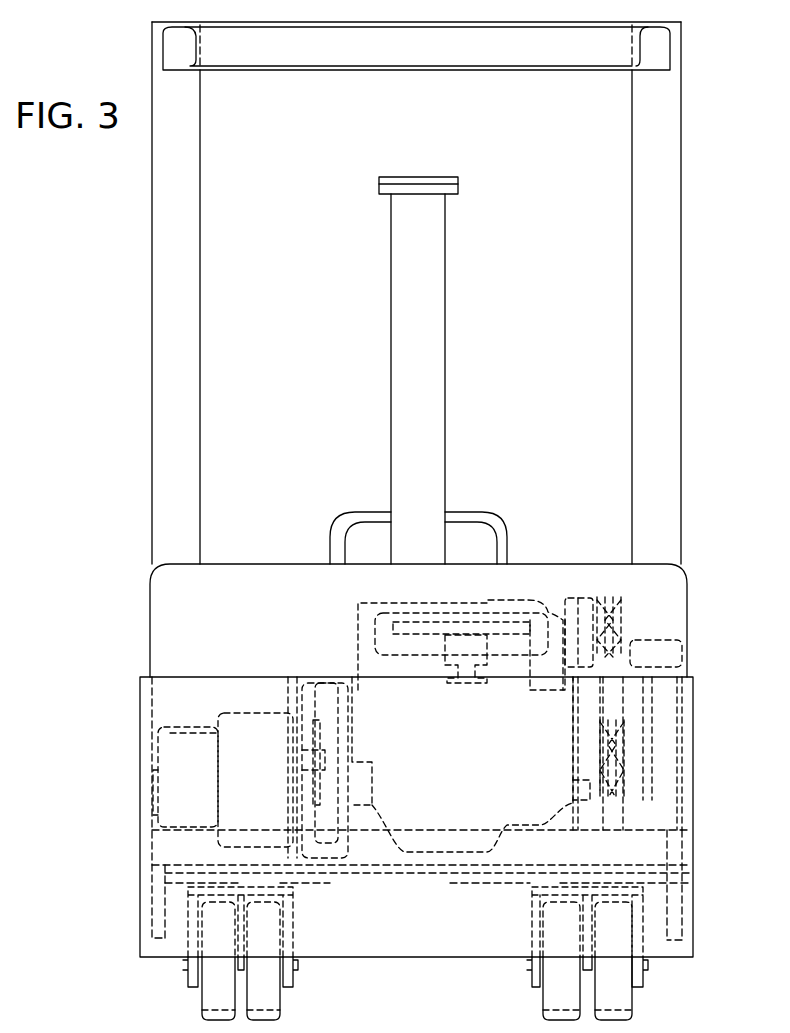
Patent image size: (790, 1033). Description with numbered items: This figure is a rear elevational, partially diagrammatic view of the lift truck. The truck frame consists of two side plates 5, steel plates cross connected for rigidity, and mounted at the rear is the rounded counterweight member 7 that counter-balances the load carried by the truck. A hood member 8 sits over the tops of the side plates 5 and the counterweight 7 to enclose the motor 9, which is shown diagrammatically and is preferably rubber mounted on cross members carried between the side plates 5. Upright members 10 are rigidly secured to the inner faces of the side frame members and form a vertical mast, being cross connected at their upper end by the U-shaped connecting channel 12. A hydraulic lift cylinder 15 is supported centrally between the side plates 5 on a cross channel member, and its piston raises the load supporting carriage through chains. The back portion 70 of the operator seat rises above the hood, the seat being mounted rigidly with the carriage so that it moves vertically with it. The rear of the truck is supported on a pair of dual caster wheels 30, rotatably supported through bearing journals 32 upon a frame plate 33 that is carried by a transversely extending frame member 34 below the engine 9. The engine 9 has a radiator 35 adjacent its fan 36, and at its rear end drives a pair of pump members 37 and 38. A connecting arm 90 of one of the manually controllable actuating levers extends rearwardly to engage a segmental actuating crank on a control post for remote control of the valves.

The side plates 5 is at (143, 728).
The counterweight member 7 is at (162, 685).
The hood member 8 is at (172, 587).
The motor 9 is at (360, 648).
The upright members 10 is at (168, 283).
The U-shaped connecting channel 12 is at (294, 52).
The hydraulic lift cylinder 15 is at (432, 350).
The dual caster wheels 30 is at (217, 989).
The bearing journals 32 is at (288, 882).
The frame plate 33 is at (180, 880).
The transversely extending frame member 34 is at (168, 865).
The radiator 35 is at (675, 663).
The fan 36 is at (636, 690).
The pump member 37 is at (248, 713).
The pump member 38 is at (198, 730).
The back portion 70 is at (478, 540).
The connecting arm 90 is at (595, 785).